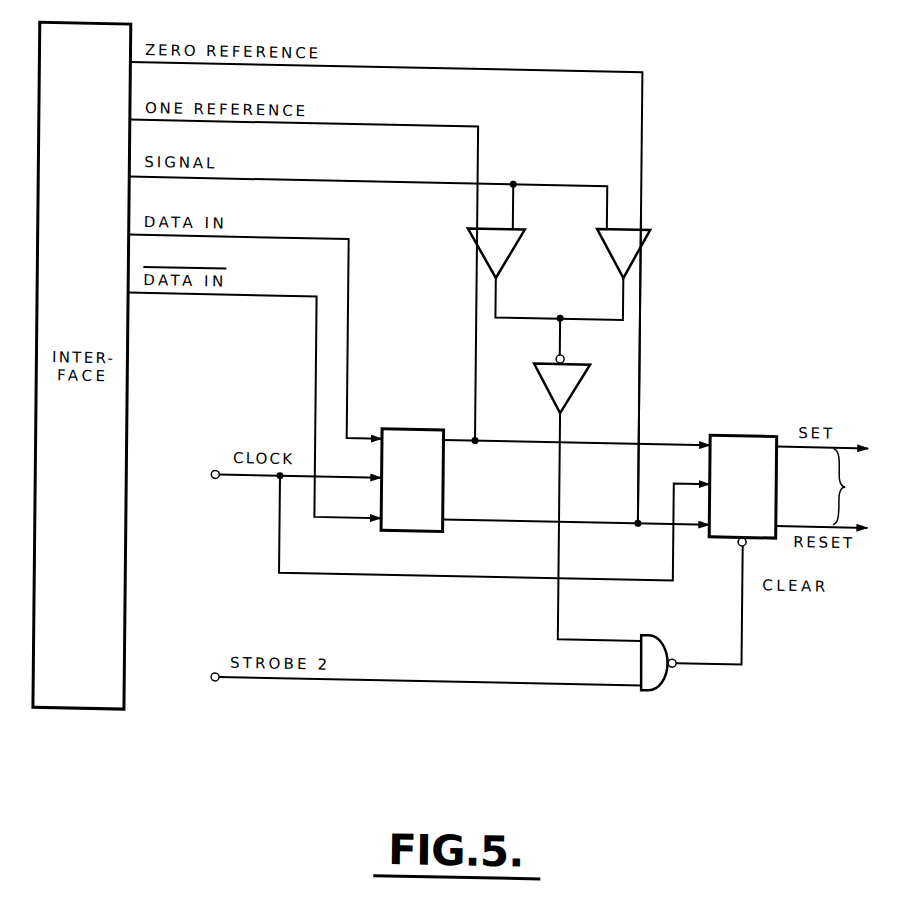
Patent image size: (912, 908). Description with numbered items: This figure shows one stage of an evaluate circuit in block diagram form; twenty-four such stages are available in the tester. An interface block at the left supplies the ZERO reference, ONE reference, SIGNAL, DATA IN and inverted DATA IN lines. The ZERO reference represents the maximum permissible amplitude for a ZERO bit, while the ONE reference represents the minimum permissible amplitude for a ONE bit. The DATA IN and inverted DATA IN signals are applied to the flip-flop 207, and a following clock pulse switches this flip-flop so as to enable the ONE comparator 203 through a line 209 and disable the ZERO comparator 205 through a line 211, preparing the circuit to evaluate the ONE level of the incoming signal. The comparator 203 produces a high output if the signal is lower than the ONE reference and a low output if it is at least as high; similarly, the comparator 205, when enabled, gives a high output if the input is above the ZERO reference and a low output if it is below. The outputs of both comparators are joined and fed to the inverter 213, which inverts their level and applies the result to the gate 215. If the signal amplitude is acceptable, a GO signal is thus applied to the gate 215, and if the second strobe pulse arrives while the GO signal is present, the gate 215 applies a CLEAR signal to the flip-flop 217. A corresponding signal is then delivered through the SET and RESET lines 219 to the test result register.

The ONE comparator 203 is at (470, 224).
The ZERO comparator 205 is at (652, 218).
The flip-flop 207 is at (417, 421).
The line 209 is at (481, 318).
The line 211 is at (646, 349).
The inverter 213 is at (581, 374).
The gate 215 is at (672, 667).
The flip-flop 217 is at (742, 421).
The lines 219 is at (832, 488).